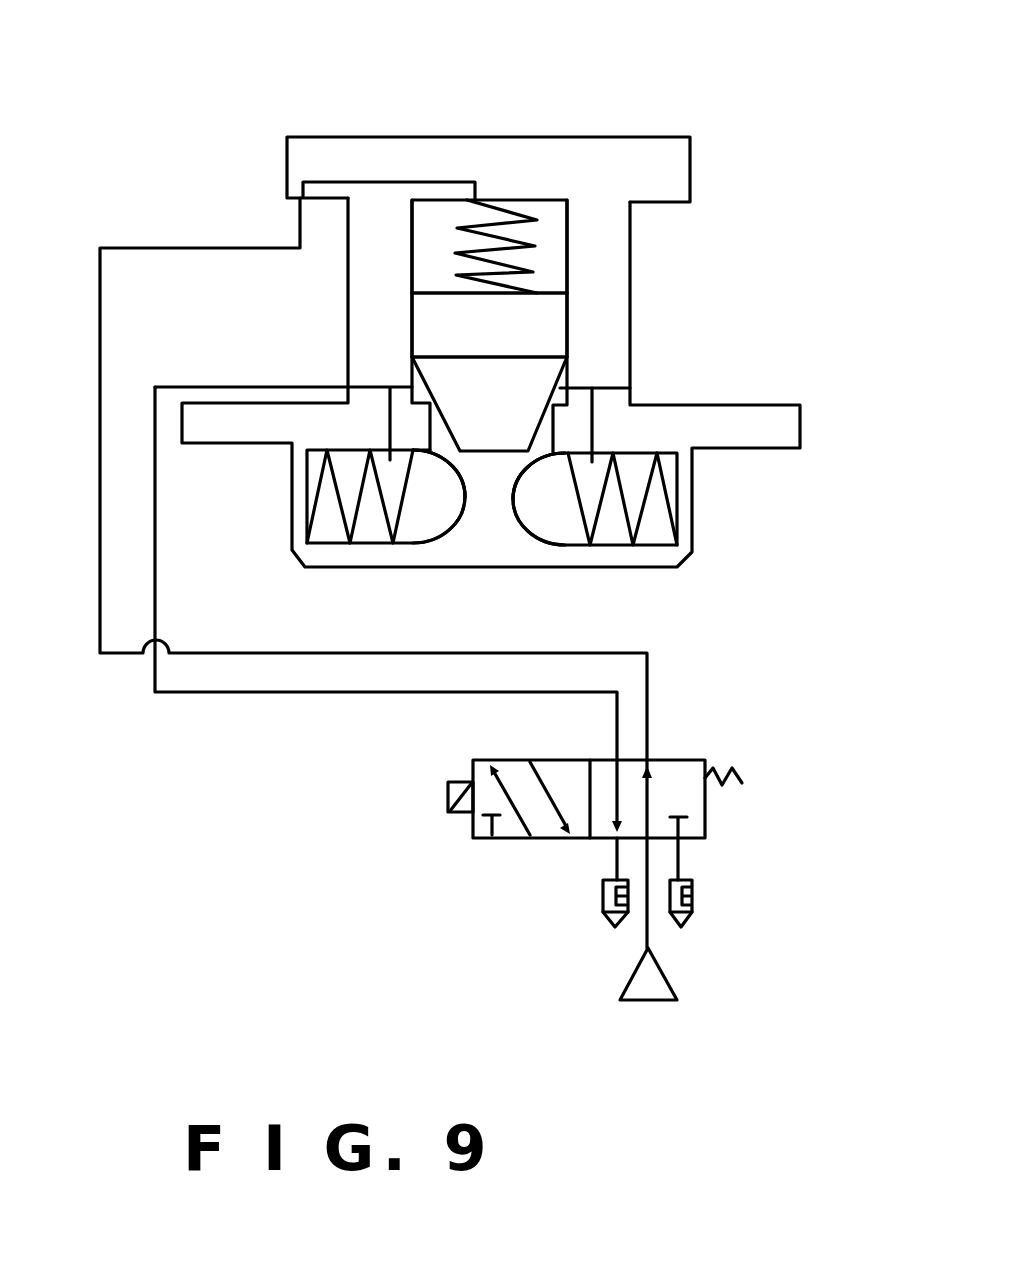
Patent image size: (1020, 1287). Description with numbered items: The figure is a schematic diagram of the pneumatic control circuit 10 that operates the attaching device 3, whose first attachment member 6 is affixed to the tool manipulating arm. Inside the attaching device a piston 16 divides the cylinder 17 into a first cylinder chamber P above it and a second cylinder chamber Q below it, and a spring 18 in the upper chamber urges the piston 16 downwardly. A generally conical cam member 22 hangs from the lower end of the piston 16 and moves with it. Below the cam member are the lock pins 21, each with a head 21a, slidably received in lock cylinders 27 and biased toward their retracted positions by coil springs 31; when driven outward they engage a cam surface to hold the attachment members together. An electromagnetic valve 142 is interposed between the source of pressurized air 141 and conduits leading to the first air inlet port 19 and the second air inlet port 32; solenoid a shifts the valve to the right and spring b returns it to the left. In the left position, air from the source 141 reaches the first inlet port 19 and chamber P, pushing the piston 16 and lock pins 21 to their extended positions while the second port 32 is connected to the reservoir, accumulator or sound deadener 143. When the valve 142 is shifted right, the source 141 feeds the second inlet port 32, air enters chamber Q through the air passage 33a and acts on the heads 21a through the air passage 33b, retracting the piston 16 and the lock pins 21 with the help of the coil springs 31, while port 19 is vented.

The attaching device 3 is at (283, 102).
The first attachment member 6 is at (710, 320).
The first air inlet port 19 is at (293, 200).
The spring 18 is at (507, 200).
The cylinder 17 is at (557, 262).
The piston 16 is at (550, 308).
The cam member 22 is at (493, 410).
The second air inlet port 32 is at (343, 387).
The air passage 33a is at (393, 387).
The air passage 33b is at (387, 423).
The coil spring 31 is at (336, 510).
The lock cylinder 27 is at (332, 473).
The lock pin 21 is at (422, 512).
The head 21a is at (525, 521).
The first cylinder chamber P is at (557, 210).
The second cylinder chamber Q is at (570, 388).
The pneumatic control circuit 10 is at (233, 810).
The electromagnetic valve 142 is at (468, 847).
The reservoir or accumulator 143 is at (603, 902).
The source of pressurized air 141 is at (648, 987).